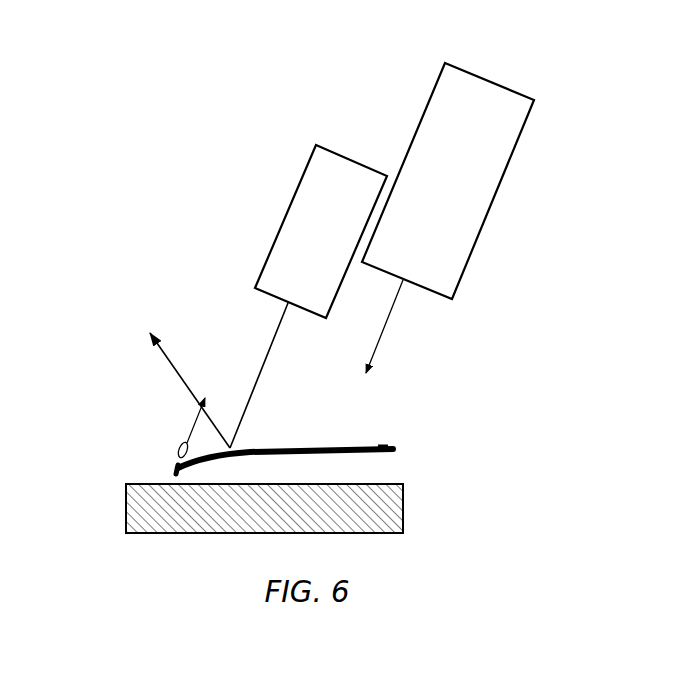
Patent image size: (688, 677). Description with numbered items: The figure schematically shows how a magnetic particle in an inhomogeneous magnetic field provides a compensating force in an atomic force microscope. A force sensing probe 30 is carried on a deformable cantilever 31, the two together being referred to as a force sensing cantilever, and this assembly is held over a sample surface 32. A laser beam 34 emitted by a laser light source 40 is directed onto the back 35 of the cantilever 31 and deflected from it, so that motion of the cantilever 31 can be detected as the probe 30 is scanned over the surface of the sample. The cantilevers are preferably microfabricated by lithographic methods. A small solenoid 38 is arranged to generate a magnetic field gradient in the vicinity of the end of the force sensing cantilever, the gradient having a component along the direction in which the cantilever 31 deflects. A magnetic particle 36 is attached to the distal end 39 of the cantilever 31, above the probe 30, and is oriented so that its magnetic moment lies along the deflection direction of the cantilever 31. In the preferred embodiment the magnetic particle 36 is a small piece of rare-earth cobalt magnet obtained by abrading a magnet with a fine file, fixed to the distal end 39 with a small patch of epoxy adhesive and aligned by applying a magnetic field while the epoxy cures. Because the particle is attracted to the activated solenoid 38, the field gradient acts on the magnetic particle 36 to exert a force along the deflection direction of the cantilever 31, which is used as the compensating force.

The force sensing probe 30 is at (178, 474).
The deformable cantilever 31 is at (394, 450).
The sample surface 32 is at (307, 484).
The laser beam 34 is at (280, 327).
The back of the cantilever 35 is at (379, 443).
The magnetic particle 36 is at (180, 446).
The solenoid 38 is at (488, 217).
The distal end of cantilever 39 is at (175, 468).
The laser light source 40 is at (297, 180).